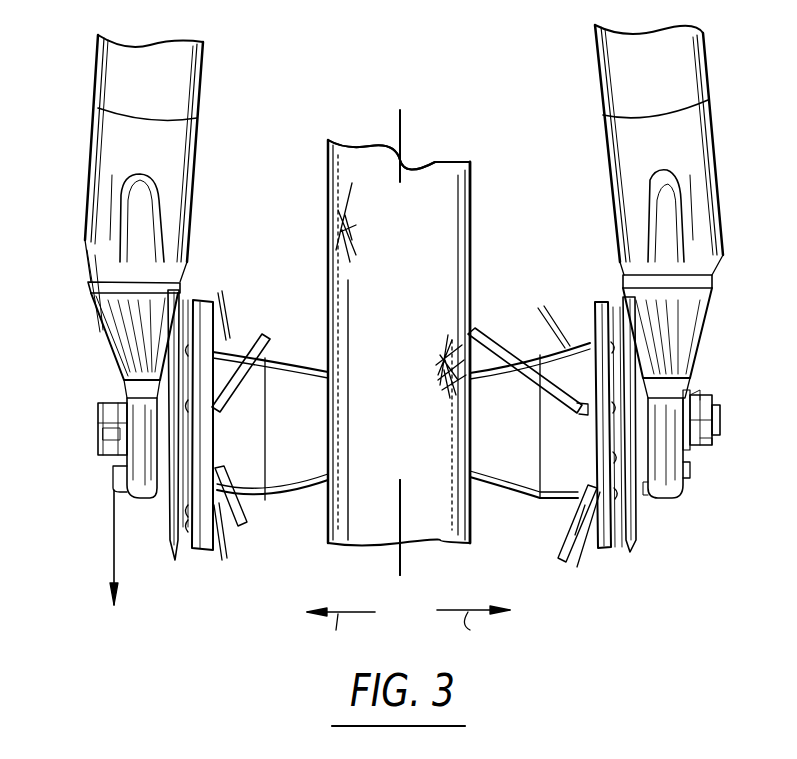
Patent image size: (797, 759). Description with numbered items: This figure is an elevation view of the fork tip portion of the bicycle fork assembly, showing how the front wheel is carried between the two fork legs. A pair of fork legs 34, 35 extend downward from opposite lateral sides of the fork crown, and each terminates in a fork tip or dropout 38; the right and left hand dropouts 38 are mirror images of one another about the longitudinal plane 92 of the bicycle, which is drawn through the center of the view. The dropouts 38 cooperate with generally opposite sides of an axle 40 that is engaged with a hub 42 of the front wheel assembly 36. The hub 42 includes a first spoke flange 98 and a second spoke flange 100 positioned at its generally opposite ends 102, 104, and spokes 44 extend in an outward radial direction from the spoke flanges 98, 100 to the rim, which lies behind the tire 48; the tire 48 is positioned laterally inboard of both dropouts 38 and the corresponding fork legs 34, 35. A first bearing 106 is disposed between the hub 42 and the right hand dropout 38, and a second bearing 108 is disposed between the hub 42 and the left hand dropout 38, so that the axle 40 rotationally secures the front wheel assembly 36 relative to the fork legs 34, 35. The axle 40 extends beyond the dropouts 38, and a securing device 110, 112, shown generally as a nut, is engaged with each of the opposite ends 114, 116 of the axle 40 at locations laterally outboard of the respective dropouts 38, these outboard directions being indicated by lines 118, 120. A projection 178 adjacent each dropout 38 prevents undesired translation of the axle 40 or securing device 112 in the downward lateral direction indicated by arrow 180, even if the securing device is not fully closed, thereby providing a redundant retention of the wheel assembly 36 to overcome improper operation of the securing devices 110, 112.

The fork leg 34 is at (705, 58).
The fork leg 35 is at (125, 68).
The front wheel assembly 36 is at (478, 106).
The dropout 38 is at (125, 160).
The axle 40 is at (720, 418).
The hub 42 is at (306, 447).
The spokes 44 is at (262, 336).
The tire 48 is at (420, 288).
The longitudinal plane 92 is at (400, 555).
The first spoke flange 98 is at (605, 560).
The second spoke flange 100 is at (211, 556).
The end of hub 102 is at (212, 278).
The end of hub 104 is at (602, 263).
The first bearing 106 is at (645, 495).
The second bearing 108 is at (164, 500).
The securing device 110 is at (705, 396).
The securing device 112 is at (105, 436).
The end of axle 114 is at (712, 437).
The end of axle 116 is at (98, 412).
The line 118 is at (475, 627).
The line 120 is at (341, 632).
The projection 178 is at (113, 478).
The arrow 180 is at (114, 562).